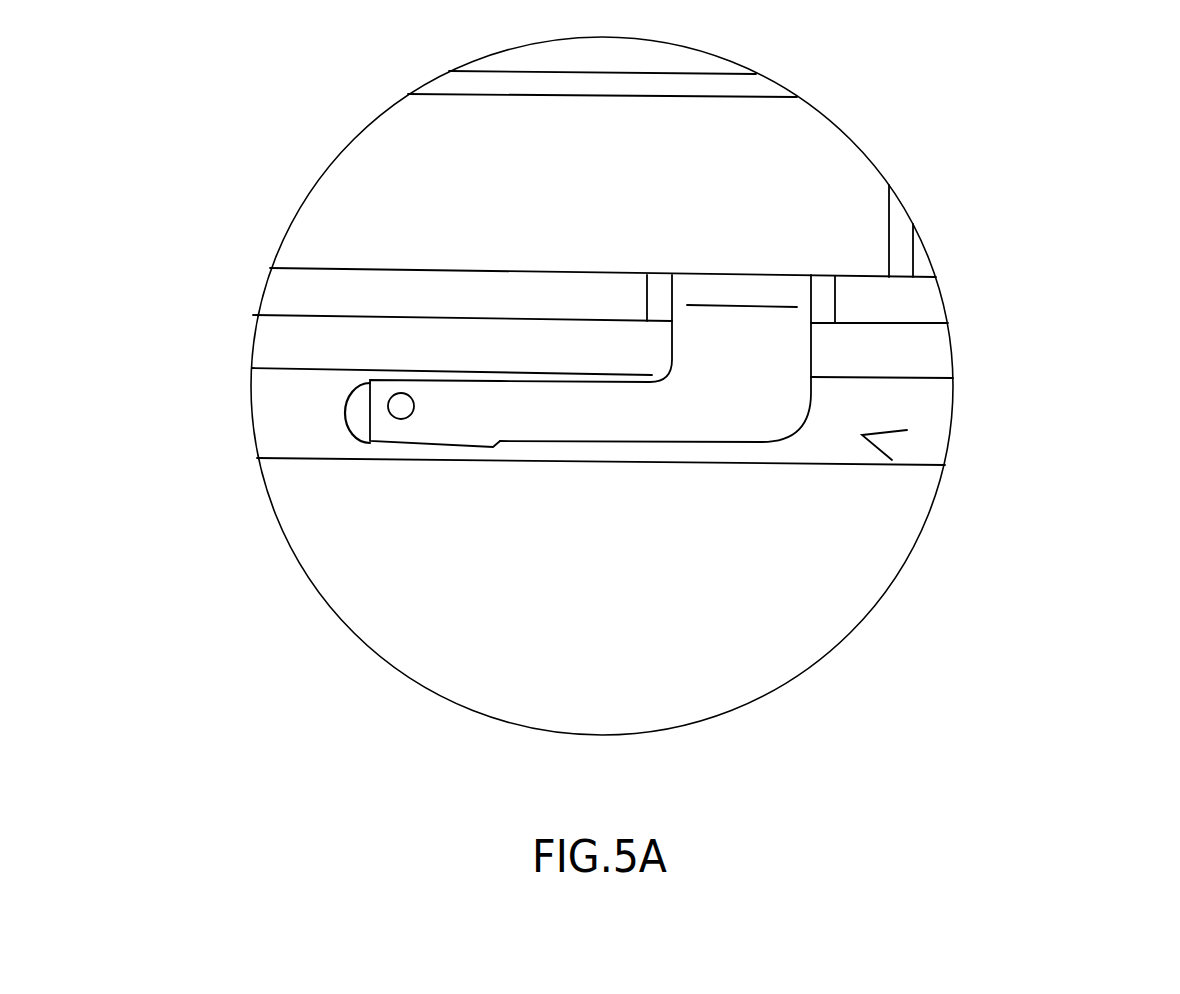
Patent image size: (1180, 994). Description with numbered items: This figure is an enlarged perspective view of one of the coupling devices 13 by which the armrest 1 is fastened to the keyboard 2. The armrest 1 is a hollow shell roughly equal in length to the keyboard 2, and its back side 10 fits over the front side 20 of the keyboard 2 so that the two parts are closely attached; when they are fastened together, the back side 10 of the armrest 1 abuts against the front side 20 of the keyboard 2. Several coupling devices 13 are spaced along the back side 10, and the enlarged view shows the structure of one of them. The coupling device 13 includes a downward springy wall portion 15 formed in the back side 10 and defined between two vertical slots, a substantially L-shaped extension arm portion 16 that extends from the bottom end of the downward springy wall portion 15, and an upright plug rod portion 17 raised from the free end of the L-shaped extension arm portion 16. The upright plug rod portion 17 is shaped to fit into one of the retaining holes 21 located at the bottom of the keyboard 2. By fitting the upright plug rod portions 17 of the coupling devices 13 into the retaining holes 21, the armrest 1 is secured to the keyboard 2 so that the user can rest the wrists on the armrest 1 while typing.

The armrest 1 is at (682, 182).
The keyboard 2 is at (680, 548).
The back side 10 is at (440, 268).
The coupling device 13 is at (862, 435).
The downward springy wall portion 15 is at (740, 288).
The L-shaped extension arm portion 16 is at (732, 388).
The upright plug rod portion 17 is at (445, 412).
The front side 20 is at (300, 368).
The retaining hole 21 is at (362, 412).